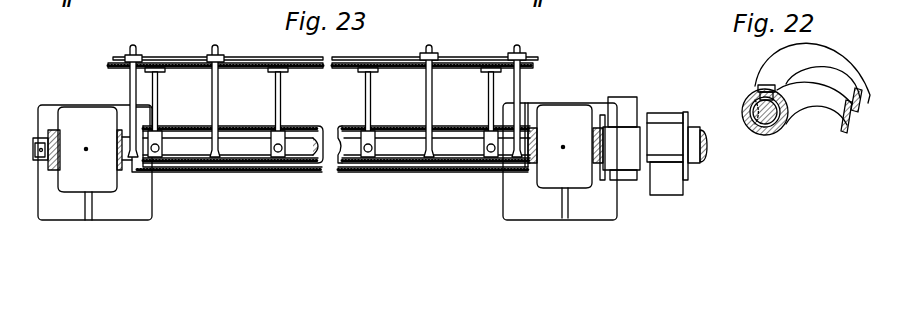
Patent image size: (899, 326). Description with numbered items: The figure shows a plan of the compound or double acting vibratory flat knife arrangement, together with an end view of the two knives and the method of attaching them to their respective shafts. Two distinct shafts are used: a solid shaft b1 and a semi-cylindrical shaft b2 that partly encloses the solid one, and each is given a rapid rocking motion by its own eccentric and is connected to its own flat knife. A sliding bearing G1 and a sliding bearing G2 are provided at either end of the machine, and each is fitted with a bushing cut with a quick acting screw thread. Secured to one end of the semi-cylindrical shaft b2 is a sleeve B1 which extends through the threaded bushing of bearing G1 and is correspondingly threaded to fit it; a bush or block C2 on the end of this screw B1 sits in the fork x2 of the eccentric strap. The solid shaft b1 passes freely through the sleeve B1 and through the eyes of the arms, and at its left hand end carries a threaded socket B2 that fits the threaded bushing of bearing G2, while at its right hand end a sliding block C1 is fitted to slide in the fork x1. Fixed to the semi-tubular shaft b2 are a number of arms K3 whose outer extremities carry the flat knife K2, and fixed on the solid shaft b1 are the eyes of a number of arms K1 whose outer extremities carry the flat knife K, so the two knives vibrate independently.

In FIG. 23, the arms K3 is at (527, 87).
In FIG. 22, the arms K3 is at (812, 73).
In FIG. 23, the arms K1 is at (158, 95).
In FIG. 22, the arms K1 is at (814, 103).
In FIG. 23, the flat knife K2 is at (364, 58).
In FIG. 22, the flat knife K2 is at (861, 107).
In FIG. 23, the flat knife K is at (341, 69).
In FIG. 22, the flat knife K is at (850, 134).
In FIG. 23, the solid shaft b1 is at (336, 144).
In FIG. 22, the solid shaft b1 is at (775, 122).
In FIG. 23, the semi-cylindrical shaft b2 is at (376, 171).
In FIG. 22, the semi-cylindrical shaft b2 is at (762, 117).
In FIG. 23, the socket B2 is at (48, 133).
In FIG. 23, the sliding bearing G2 is at (87, 163).
In FIG. 23, the sleeve B1 is at (537, 143).
In FIG. 23, the sliding bearing G1 is at (564, 161).
In FIG. 23, the fork x2 is at (622, 108).
In FIG. 23, the bush or block C2 is at (621, 153).
In FIG. 23, the sliding block or bush C1 is at (677, 146).
In FIG. 23, the fork x1 is at (666, 178).